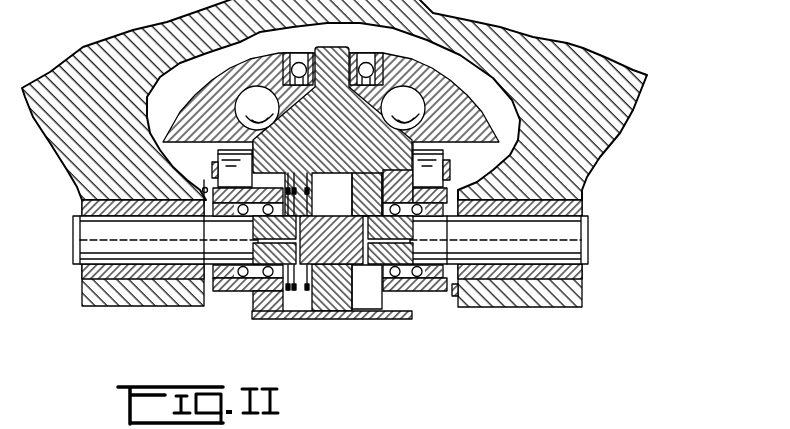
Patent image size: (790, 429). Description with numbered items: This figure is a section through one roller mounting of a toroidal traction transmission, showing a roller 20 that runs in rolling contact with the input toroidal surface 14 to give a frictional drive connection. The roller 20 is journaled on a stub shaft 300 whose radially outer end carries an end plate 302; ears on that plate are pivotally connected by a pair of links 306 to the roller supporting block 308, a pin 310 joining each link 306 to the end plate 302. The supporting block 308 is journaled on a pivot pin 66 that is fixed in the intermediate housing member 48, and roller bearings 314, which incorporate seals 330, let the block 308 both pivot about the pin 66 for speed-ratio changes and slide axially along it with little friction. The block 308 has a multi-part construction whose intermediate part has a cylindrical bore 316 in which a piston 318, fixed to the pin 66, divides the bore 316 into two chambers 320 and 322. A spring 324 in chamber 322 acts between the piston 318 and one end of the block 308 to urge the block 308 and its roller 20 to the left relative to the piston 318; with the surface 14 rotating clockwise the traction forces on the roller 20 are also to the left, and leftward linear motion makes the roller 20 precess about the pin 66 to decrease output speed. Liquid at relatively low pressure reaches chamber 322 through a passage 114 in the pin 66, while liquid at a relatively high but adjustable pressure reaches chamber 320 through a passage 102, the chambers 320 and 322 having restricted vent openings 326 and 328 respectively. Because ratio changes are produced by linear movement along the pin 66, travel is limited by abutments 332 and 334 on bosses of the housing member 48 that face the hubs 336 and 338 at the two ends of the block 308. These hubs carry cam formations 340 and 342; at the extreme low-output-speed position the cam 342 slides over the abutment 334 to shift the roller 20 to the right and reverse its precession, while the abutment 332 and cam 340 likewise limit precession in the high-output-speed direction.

The stub shaft 300 is at (343, 34).
The roller 20 is at (447, 67).
The toroidal surface 14 is at (489, 112).
The intermediate housing member 48 is at (63, 138).
The link 306 is at (220, 158).
The pin 310 is at (212, 171).
The abutment 334 is at (202, 190).
The cylindrical bore 316 is at (297, 173).
The piston 318 is at (333, 176).
The end plate 302 is at (402, 147).
The piston chamber 320 is at (367, 192).
The pivot pin 66 is at (80, 253).
The cam formation 342 is at (203, 224).
The passage 114 is at (267, 241).
The piston chamber 322 is at (304, 231).
The passage 102 is at (402, 241).
The cam formation 340 is at (448, 262).
The seal 330 is at (220, 291).
The hub 338 is at (232, 294).
The roller bearing 314 is at (248, 291).
The restricted vent opening 328 is at (263, 306).
The spring 324 is at (300, 296).
The supporting block 308 is at (336, 319).
The restricted vent opening 326 is at (397, 306).
The hub 336 is at (437, 291).
The abutment 332 is at (459, 291).